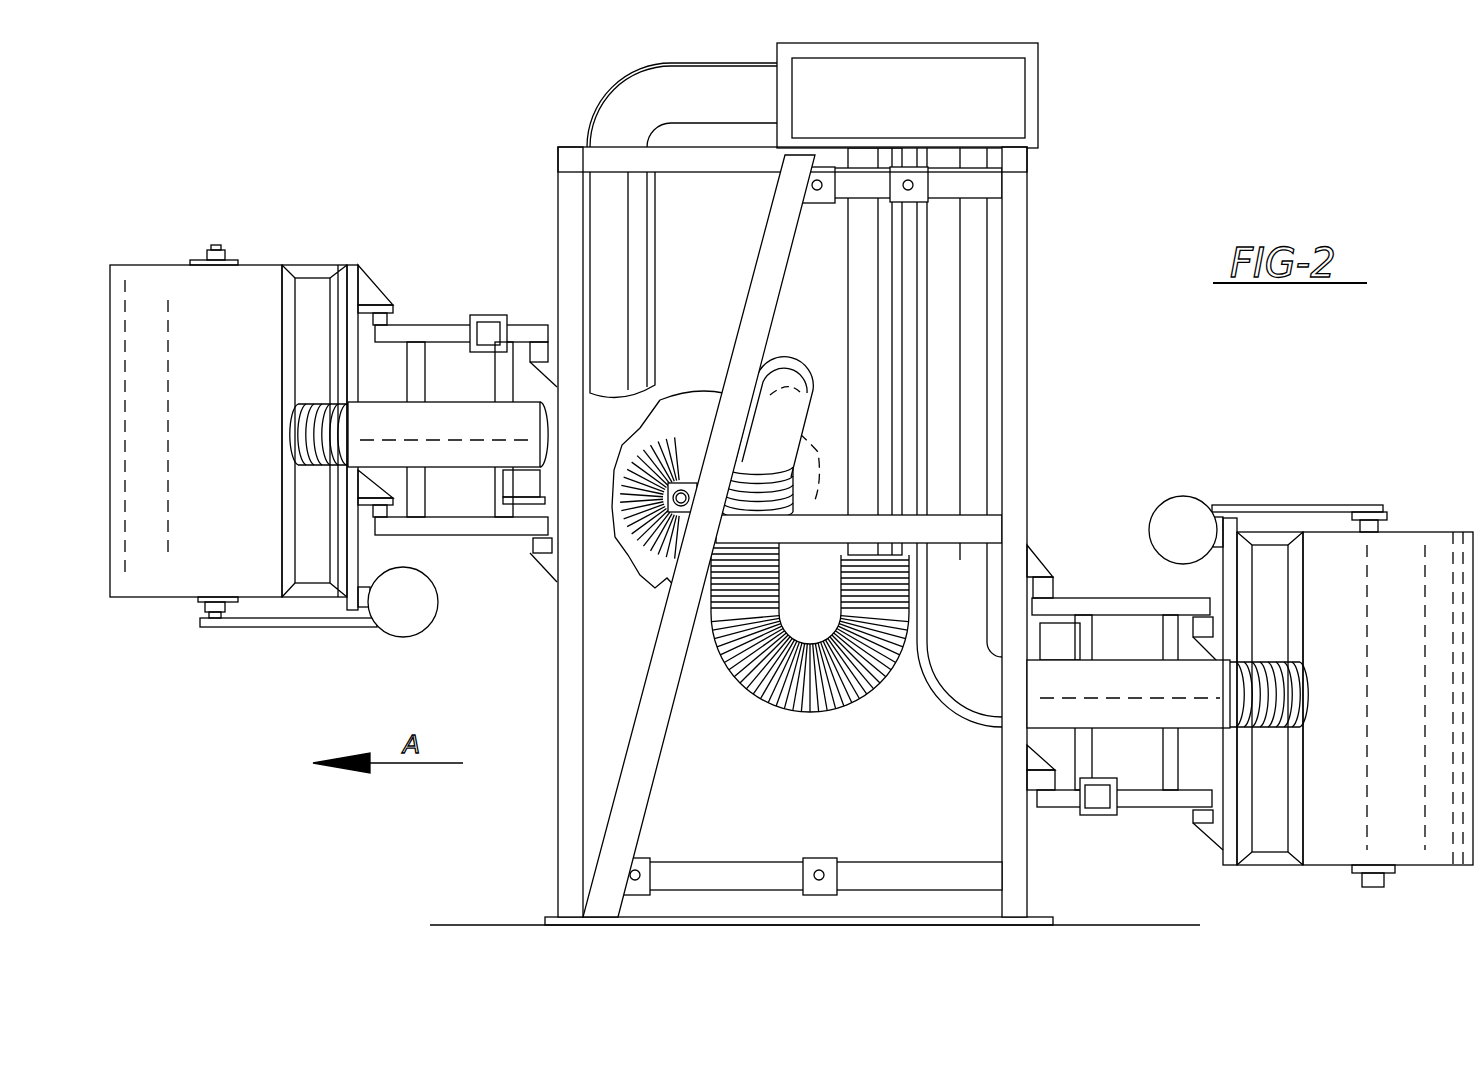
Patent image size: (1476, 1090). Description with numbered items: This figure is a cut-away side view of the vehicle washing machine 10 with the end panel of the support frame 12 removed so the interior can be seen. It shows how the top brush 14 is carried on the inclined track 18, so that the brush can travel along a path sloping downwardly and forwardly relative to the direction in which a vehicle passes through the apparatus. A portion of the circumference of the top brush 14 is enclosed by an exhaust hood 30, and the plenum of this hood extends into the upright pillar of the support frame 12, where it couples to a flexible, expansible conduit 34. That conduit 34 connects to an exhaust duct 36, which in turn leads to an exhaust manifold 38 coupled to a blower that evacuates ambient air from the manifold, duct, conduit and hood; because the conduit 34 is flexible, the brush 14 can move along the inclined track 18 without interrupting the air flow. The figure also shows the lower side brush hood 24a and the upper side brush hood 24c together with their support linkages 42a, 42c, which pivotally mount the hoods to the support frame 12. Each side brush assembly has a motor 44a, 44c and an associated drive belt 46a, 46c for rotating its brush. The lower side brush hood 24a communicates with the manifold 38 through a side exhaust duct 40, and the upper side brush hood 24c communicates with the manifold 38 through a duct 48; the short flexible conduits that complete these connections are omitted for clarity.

The machine 10 is at (1060, 126).
The support frame 12 is at (568, 193).
The top brush 14 is at (640, 552).
The inclined track 18 is at (665, 695).
The lower side brush hood 24a is at (1440, 545).
The upper side brush hood 24c is at (165, 283).
The exhaust hood 30 is at (700, 400).
The flexible expansible conduit 34 is at (845, 700).
The exhaust duct 36 is at (853, 248).
The exhaust manifold 38 is at (918, 105).
The side exhaust duct 40 is at (975, 250).
The support linkage 42a is at (1152, 814).
The support linkage 42c is at (447, 318).
The motor 44a is at (1150, 505).
The motor 44c is at (434, 614).
The drive belt 46a is at (1262, 502).
The drive belt 46c is at (280, 628).
The duct 48 is at (598, 118).